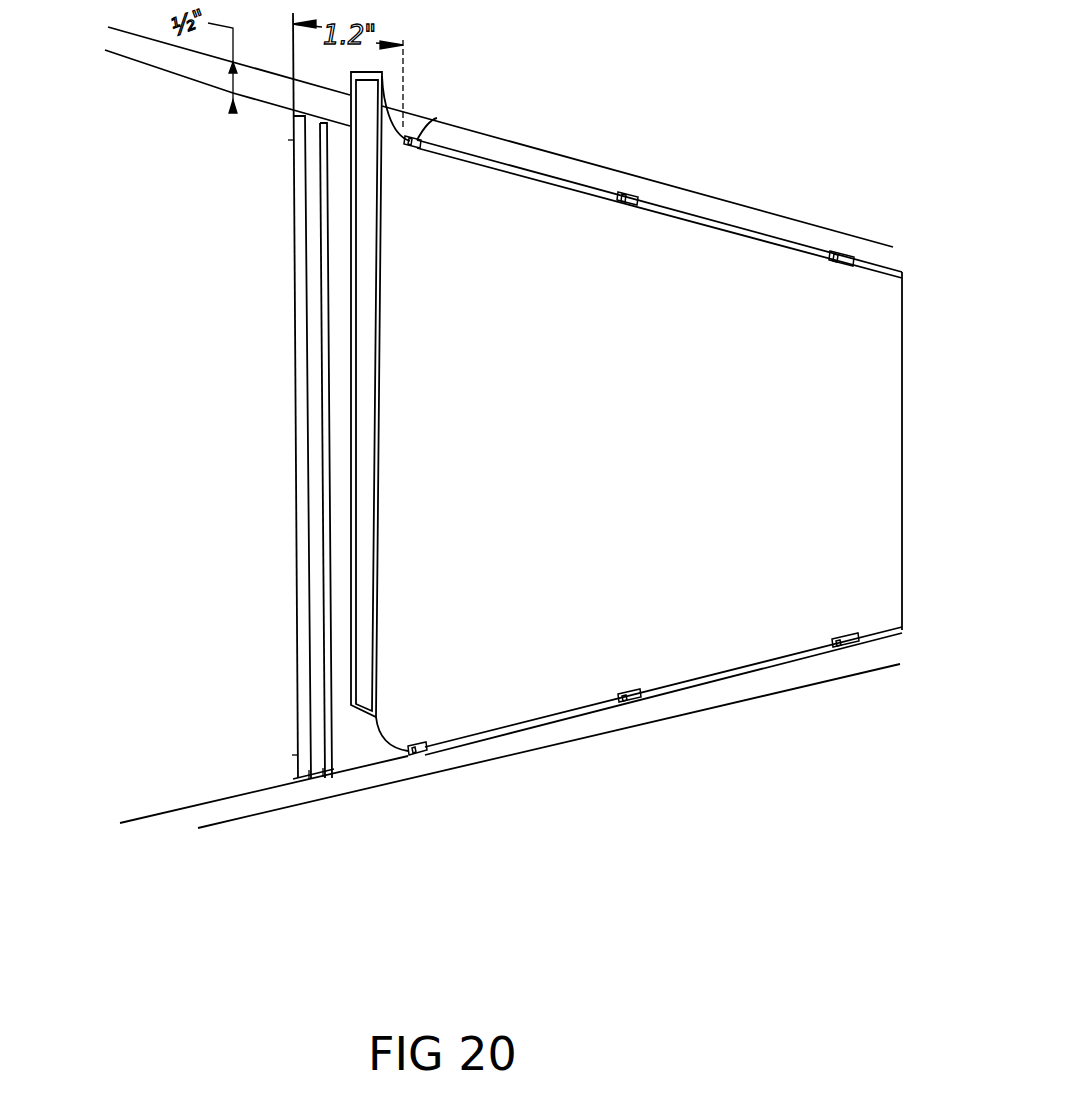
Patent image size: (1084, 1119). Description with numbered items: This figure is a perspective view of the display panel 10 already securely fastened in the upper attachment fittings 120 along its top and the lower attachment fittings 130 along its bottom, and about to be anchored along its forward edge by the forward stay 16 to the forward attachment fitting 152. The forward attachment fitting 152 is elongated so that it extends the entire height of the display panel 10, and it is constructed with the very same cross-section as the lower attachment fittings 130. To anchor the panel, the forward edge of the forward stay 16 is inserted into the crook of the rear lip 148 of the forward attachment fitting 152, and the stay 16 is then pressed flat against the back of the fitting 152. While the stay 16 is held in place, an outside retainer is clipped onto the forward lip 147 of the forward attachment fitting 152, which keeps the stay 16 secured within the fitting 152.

The display panel 10 is at (652, 463).
The forward stay 16 is at (366, 698).
The upper attachment fitting 120 is at (428, 132).
The lower attachment fitting 130 is at (425, 752).
The forward lip 147 is at (318, 700).
The rear lip 148 is at (318, 763).
The forward attachment fitting 152 is at (290, 305).